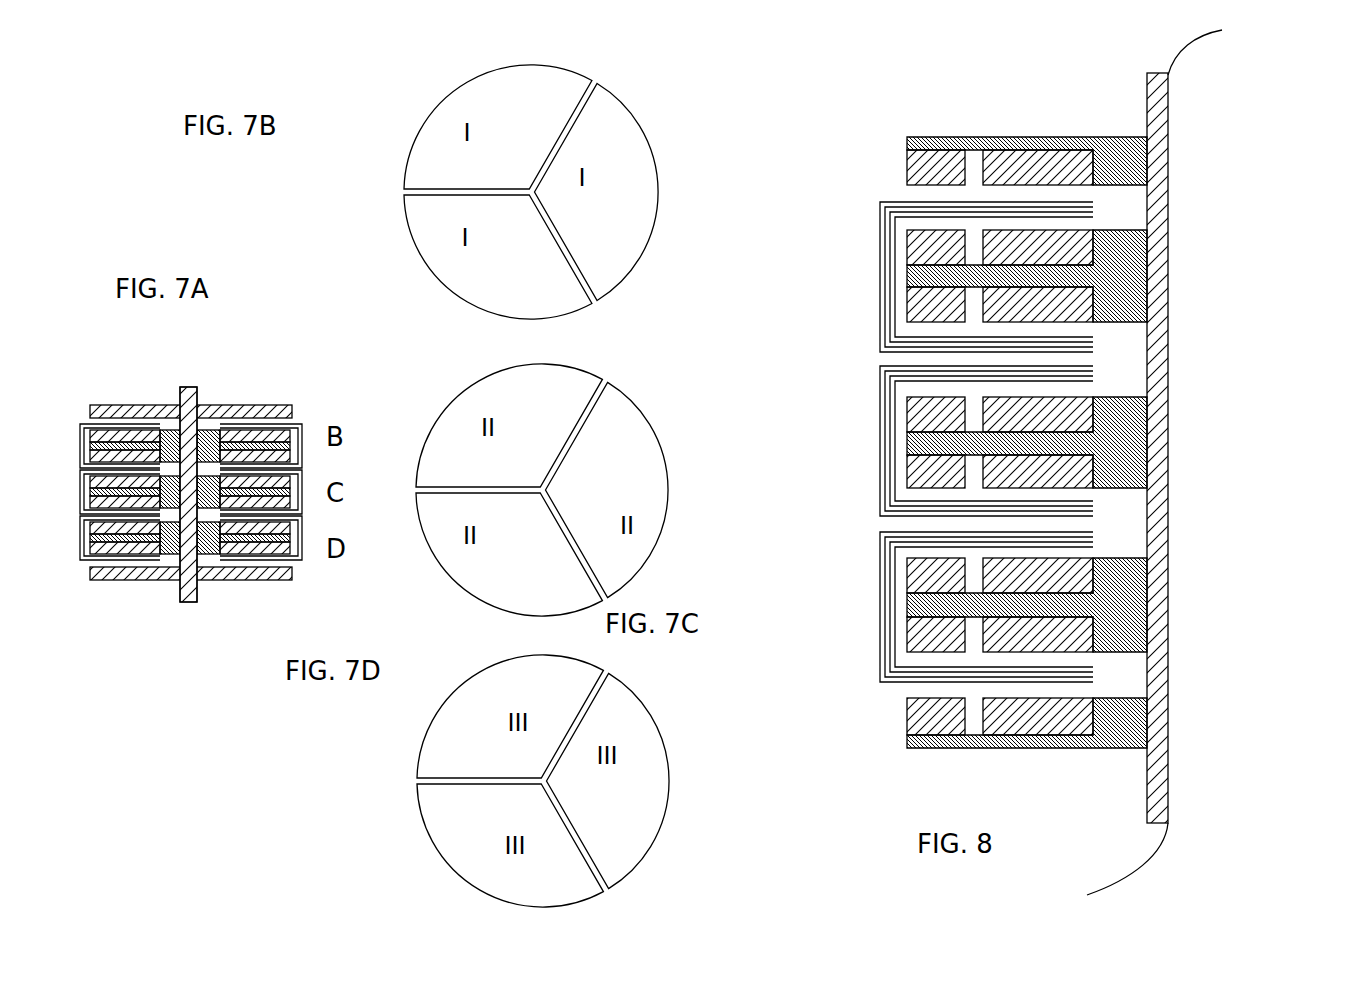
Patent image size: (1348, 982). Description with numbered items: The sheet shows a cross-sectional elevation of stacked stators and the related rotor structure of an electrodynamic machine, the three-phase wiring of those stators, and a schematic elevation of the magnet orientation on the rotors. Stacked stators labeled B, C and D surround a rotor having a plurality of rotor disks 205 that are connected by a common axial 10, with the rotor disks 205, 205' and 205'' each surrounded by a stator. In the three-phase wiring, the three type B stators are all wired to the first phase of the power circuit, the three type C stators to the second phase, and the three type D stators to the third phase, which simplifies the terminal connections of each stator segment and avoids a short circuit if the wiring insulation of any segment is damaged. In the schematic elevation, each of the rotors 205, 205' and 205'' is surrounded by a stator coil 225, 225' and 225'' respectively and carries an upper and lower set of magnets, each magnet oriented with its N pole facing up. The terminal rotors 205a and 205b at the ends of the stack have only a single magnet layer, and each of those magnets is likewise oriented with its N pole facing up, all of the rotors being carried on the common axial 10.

In FIG. 7A, the common axial 10 is at (196, 392).
In FIG. 8, the common axial 10 is at (1160, 276).
In FIG. 7A, the rotor disk 205 is at (168, 410).
In FIG. 8, the rotor disk 205 is at (1089, 269).
In FIG. 7A, the rotor disk 205' is at (150, 504).
In FIG. 8, the rotor disk 205' is at (1093, 443).
In FIG. 7A, the rotor disk 205'' is at (163, 576).
In FIG. 8, the rotor disk 205'' is at (1113, 605).
In FIG. 7A, the terminal rotor 205a is at (294, 395).
In FIG. 8, the terminal rotor 205a is at (1045, 146).
In FIG. 7A, the terminal rotor 205b is at (285, 583).
In FIG. 8, the terminal rotor 205b is at (907, 752).
In FIG. 8, the stator coil 225 is at (946, 266).
In FIG. 8, the stator coil 225' is at (951, 440).
In FIG. 8, the stator coil 225'' is at (955, 604).